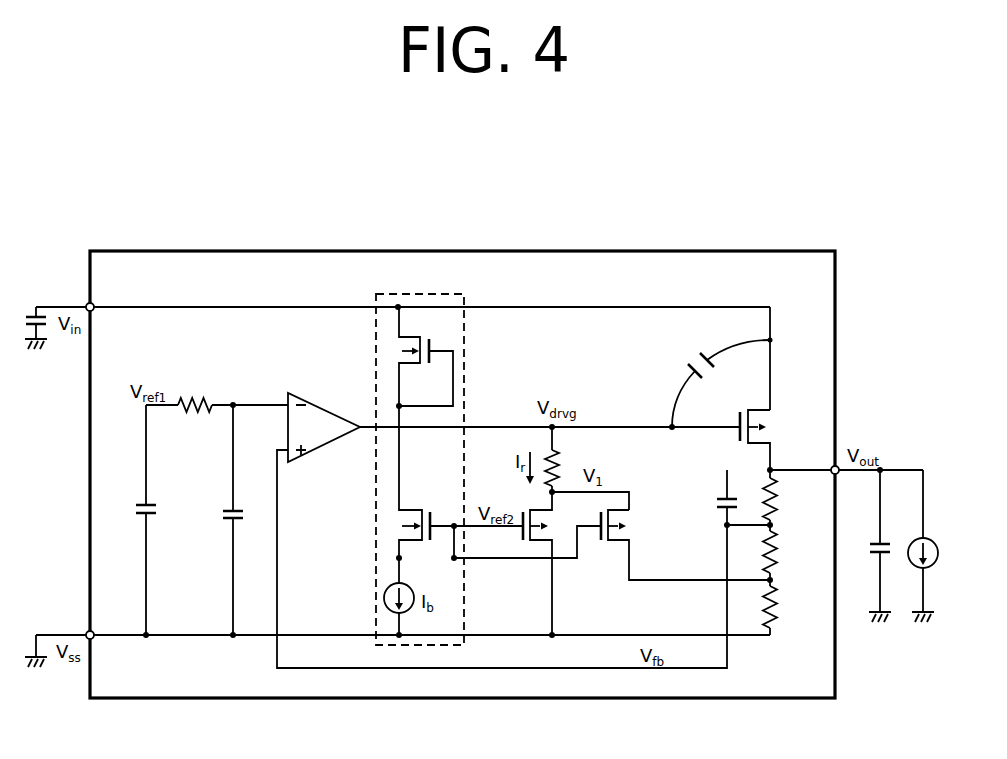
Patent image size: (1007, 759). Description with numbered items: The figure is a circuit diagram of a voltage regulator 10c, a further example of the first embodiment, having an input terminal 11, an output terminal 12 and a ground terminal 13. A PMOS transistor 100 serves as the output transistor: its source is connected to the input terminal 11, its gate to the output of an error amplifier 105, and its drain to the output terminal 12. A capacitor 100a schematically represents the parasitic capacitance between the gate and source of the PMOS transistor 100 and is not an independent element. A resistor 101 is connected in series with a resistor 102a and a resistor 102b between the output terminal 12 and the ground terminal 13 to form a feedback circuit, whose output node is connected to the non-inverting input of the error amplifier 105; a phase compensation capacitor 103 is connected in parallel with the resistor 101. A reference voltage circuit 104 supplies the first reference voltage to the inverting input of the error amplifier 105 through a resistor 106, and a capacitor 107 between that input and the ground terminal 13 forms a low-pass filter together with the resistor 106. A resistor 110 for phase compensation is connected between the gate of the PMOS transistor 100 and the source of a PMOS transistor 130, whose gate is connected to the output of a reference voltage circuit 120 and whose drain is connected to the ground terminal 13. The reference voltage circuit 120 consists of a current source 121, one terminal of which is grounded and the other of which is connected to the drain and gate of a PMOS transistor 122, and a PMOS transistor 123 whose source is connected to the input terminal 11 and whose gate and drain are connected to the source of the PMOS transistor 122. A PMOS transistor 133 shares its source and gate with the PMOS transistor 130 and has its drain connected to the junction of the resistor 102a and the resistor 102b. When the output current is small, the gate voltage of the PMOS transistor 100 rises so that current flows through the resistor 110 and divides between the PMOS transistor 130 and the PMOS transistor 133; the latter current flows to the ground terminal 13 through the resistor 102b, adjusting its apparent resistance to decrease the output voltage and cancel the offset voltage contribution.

The voltage regulator 10c is at (835, 251).
The input terminal 11 is at (88, 306).
The output terminal 12 is at (837, 474).
The ground terminal 13 is at (88, 634).
The PMOS transistor 100 is at (752, 411).
The capacitor 100a is at (697, 367).
The resistor 101 is at (777, 511).
The resistor 102a is at (777, 566).
The resistor 102b is at (777, 621).
The phase compensation capacitor 103 is at (717, 501).
The reference voltage circuit 104 is at (140, 504).
The error amplifier 105 is at (305, 406).
The resistor 106 is at (193, 398).
The capacitor 107 is at (228, 509).
The resistor 110 is at (560, 456).
The reference voltage circuit 120 is at (464, 366).
The current source 121 is at (413, 593).
The PMOS transistor 122 is at (408, 510).
The PMOS transistor 123 is at (412, 366).
The PMOS transistor 130 is at (537, 546).
The PMOS transistor 133 is at (612, 546).